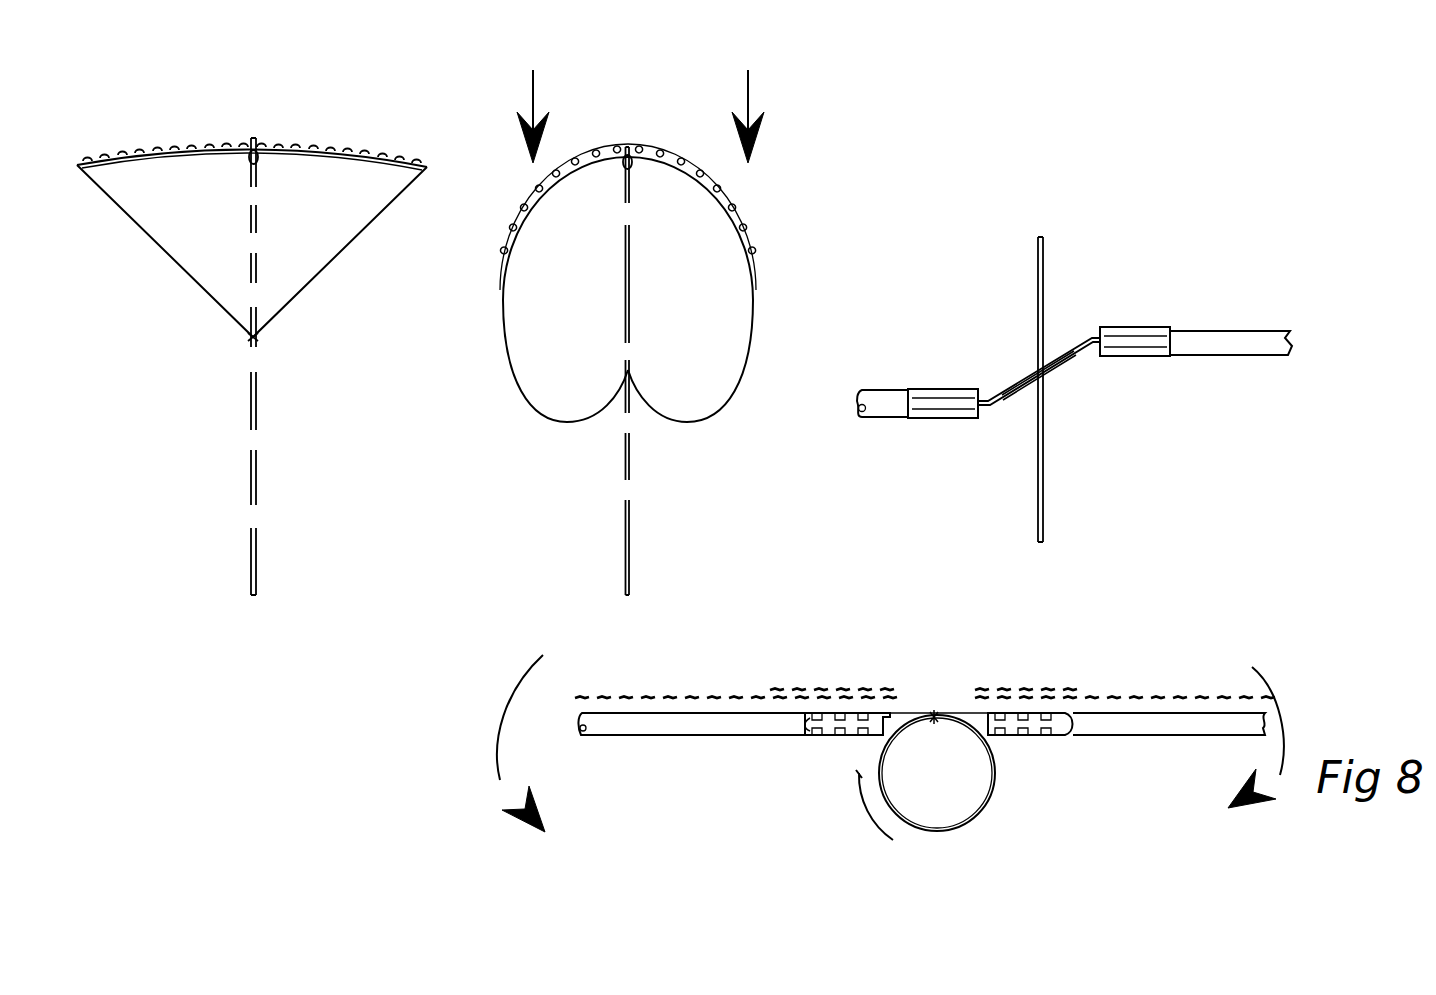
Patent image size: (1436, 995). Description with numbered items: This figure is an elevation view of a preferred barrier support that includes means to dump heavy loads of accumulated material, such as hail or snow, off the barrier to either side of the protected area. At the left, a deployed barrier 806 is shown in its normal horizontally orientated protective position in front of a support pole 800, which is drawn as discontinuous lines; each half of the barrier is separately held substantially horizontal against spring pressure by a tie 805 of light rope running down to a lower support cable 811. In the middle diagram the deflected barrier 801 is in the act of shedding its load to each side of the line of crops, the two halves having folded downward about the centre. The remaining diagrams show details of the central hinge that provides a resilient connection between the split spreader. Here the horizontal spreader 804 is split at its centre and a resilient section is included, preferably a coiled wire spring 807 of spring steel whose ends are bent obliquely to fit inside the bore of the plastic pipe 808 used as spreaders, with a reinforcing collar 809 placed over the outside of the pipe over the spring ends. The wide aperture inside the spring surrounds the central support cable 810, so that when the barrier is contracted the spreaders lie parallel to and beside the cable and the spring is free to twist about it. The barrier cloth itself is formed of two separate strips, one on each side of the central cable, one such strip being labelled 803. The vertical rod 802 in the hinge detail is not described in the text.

The support pole 800 is at (256, 425).
The deflected barrier 801 is at (735, 225).
The vertical rod 802 is at (1038, 250).
The strip of cloth 803 is at (757, 697).
The horizontal spreader 804 is at (228, 152).
The tie 805 is at (343, 258).
The deployed barrier 806 is at (397, 158).
The coiled wire spring 807 is at (1057, 367).
The plastic pipe 808 is at (893, 390).
The reinforcing collar 809 is at (958, 418).
The central support cable 810 is at (936, 712).
The lower support cable 811 is at (250, 340).